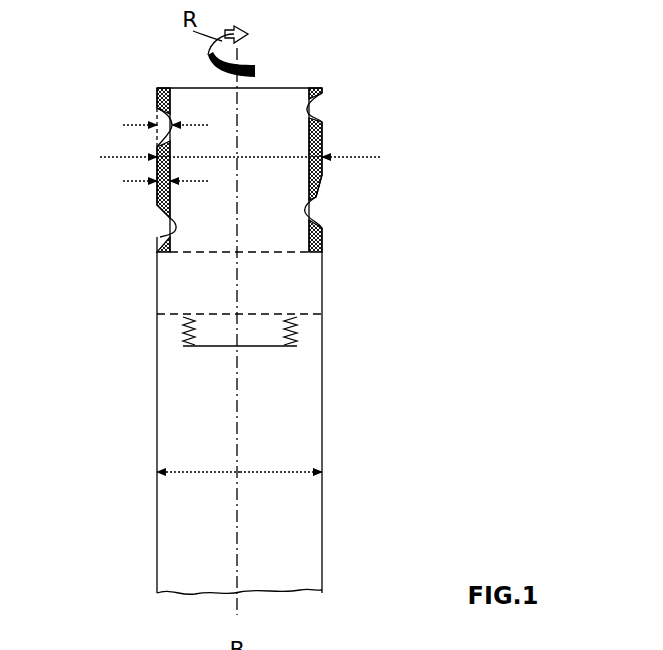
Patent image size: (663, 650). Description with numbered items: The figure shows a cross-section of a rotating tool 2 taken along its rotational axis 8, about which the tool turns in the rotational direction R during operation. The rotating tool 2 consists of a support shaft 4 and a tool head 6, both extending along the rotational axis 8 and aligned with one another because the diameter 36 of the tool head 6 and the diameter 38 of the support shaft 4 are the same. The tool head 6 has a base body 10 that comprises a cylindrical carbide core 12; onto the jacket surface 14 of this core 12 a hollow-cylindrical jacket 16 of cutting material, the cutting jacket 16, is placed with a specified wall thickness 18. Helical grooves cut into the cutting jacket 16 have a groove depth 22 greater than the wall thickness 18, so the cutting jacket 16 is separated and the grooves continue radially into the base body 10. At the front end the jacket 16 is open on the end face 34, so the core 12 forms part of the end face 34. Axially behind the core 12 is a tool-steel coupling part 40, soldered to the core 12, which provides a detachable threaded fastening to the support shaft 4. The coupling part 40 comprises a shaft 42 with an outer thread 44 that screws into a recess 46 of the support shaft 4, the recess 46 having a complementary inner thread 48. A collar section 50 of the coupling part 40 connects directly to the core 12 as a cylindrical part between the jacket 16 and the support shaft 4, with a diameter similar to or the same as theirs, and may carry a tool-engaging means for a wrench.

The rotating tool 2 is at (427, 110).
The support shaft 4 is at (173, 549).
The tool head 6 is at (332, 137).
The rotational axis 8 is at (240, 507).
The base body 10 is at (324, 312).
The core 12 is at (200, 219).
The jacket surface 14 is at (322, 243).
The cutting jacket 16 is at (322, 180).
The wall thickness 18 is at (130, 181).
The groove depth 22 is at (132, 125).
The end face 34 is at (282, 88).
The diameter of the tool head 36 is at (118, 157).
The diameter of the support shaft 38 is at (195, 472).
The coupling part 40 is at (300, 275).
The shaft 42 is at (213, 336).
The outer thread 44 is at (292, 331).
The recess 46 is at (217, 348).
The inner thread 48 is at (298, 348).
The collar section 50 is at (185, 280).